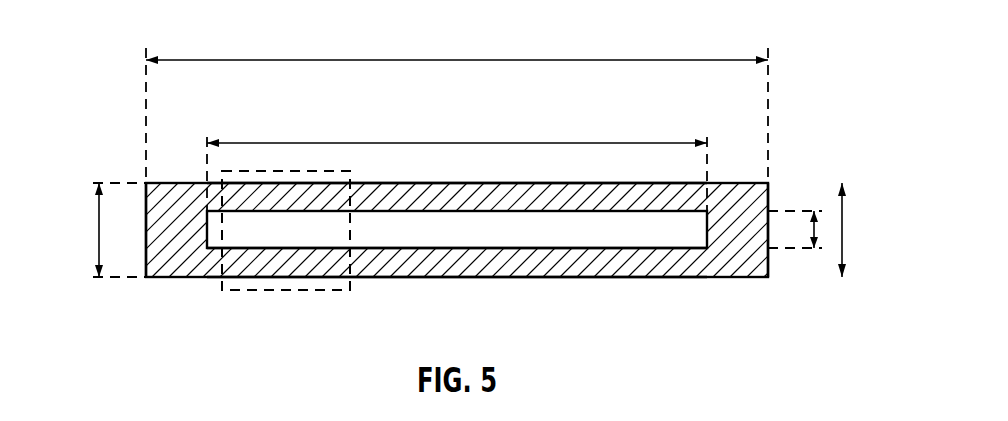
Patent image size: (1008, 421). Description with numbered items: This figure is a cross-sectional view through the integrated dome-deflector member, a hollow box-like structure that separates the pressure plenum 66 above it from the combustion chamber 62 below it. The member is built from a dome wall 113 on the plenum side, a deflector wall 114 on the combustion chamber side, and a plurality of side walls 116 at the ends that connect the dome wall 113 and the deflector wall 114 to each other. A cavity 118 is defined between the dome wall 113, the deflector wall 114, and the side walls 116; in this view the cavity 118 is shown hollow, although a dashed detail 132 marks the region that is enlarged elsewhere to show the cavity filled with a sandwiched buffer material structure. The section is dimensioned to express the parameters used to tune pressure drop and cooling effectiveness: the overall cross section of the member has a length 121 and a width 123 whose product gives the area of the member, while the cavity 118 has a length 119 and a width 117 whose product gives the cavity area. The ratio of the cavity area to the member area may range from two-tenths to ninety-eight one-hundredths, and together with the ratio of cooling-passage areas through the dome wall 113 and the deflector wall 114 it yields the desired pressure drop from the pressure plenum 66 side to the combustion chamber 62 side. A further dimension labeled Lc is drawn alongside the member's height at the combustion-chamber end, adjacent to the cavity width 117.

The dome wall 113 is at (420, 195).
The cavity 118 is at (638, 224).
The side walls 116 is at (163, 193).
The deflector wall 114 is at (253, 267).
The detail 132 is at (233, 292).
The pressure plenum 66 is at (305, 112).
The combustion chamber 62 is at (385, 330).
The length (L1) 121 is at (457, 60).
The length (L2) 119 is at (457, 143).
The width (W1) 123 is at (97, 230).
The width (W2) 117 is at (811, 238).
The characteristic length Lc is at (843, 230).